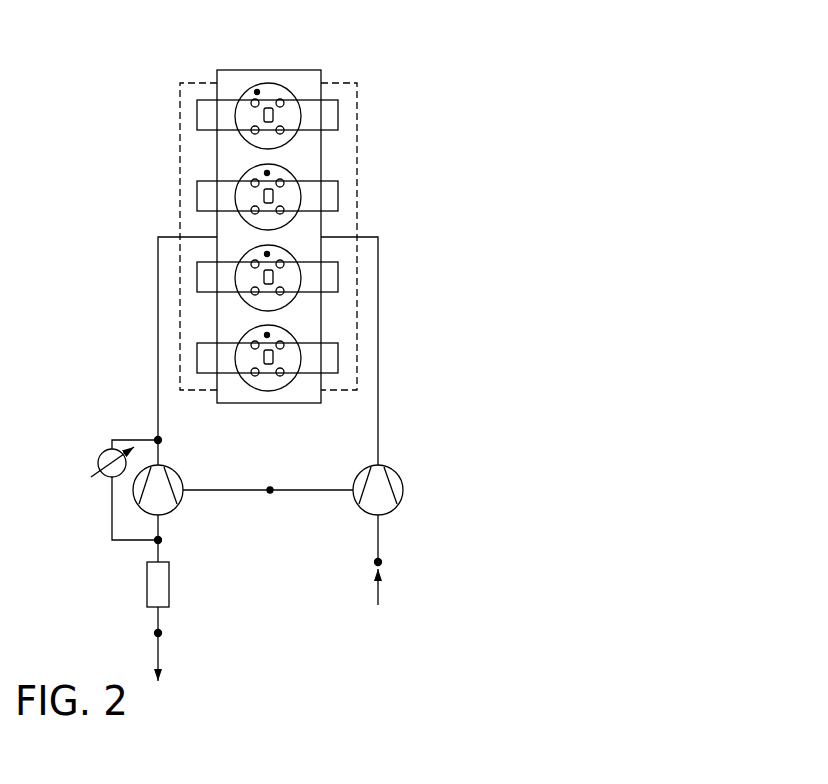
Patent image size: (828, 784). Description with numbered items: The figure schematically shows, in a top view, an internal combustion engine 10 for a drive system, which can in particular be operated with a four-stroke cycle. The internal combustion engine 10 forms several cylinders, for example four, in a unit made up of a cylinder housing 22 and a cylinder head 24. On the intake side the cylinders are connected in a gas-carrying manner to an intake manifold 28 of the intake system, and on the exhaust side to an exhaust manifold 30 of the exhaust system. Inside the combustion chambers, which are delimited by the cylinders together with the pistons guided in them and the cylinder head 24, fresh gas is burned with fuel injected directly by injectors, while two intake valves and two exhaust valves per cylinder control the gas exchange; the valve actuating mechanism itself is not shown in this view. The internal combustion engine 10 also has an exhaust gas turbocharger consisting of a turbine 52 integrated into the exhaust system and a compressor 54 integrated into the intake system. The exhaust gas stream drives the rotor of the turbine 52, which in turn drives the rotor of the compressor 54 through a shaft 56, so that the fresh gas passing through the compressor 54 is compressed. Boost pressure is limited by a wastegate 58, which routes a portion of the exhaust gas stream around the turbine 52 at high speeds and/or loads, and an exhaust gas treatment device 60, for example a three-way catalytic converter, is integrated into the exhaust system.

The internal combustion engine 10 is at (291, 341).
The cylinder housing 22 is at (202, 221).
The cylinder head 24 is at (227, 77).
The intake manifold 28 is at (357, 90).
The exhaust manifold 30 is at (180, 93).
The turbine 52 is at (151, 497).
The compressor 54 is at (382, 488).
The shaft 56 is at (270, 493).
The wastegate 58 is at (106, 439).
The exhaust gas treatment device 60 is at (147, 589).